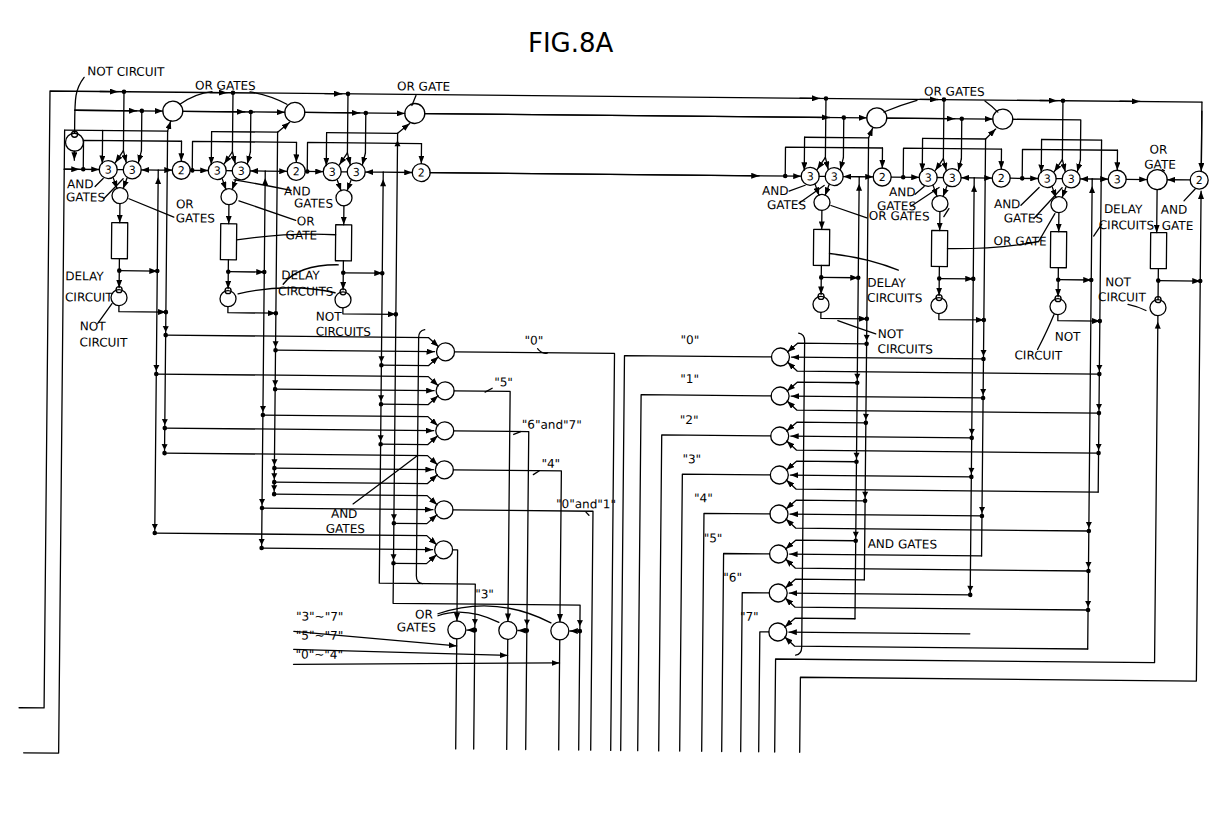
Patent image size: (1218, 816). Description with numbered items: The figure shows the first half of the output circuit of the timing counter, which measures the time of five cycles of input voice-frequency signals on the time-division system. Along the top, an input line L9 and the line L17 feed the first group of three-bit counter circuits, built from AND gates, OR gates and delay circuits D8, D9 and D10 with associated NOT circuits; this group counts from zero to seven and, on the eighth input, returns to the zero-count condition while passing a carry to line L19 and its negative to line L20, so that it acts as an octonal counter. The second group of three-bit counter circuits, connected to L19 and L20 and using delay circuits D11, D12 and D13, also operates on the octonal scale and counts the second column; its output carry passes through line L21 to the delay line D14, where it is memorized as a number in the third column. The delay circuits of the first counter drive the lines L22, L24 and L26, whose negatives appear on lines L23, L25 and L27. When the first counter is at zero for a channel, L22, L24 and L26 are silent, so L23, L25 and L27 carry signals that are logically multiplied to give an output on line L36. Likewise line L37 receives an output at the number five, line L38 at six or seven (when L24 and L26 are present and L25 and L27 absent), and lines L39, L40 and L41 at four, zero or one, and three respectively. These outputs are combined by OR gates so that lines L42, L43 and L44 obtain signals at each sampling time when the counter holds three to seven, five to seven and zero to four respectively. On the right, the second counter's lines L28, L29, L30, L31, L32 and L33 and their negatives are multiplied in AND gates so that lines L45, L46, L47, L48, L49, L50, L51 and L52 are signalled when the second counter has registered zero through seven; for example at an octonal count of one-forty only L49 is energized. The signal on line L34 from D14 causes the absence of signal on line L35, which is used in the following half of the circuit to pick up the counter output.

The line L9 is at (66, 686).
The line L17 is at (41, 441).
The line L19 is at (615, 168).
The line L20 is at (646, 126).
The line L21 is at (1140, 194).
The line L22 is at (138, 265).
The line L23 is at (158, 314).
The line L24 is at (246, 266).
The line L25 is at (268, 315).
The line L26 is at (363, 267).
The line L27 is at (385, 317).
The line L28 is at (840, 271).
The line L29 is at (859, 317).
The line L30 is at (968, 268).
The line L31 is at (977, 322).
The line L32 is at (1068, 262).
The line L33 is at (1095, 323).
The line L34 is at (1179, 237).
The line L35 is at (1158, 355).
The line L36 is at (387, 538).
The line L37 is at (330, 493).
The line L38 is at (345, 577).
The line L39 is at (361, 533).
The line L40 is at (425, 617).
The line L41 is at (314, 572).
The line L42 is at (448, 684).
The line L43 is at (495, 685).
The line L44 is at (553, 685).
The line L45 is at (862, 544).
The line L46 is at (870, 563).
The line L47 is at (880, 583).
The line L48 is at (889, 603).
The line L49 is at (897, 622).
The line L50 is at (907, 642).
The line L51 is at (914, 666).
The line L52 is at (912, 685).
The delay line D8 is at (113, 248).
The delay line D9 is at (218, 242).
The delay line D10 is at (331, 245).
The delay line D11 is at (806, 249).
The delay line D12 is at (925, 250).
The delay line D13 is at (1045, 251).
The delay line D14 is at (1143, 252).